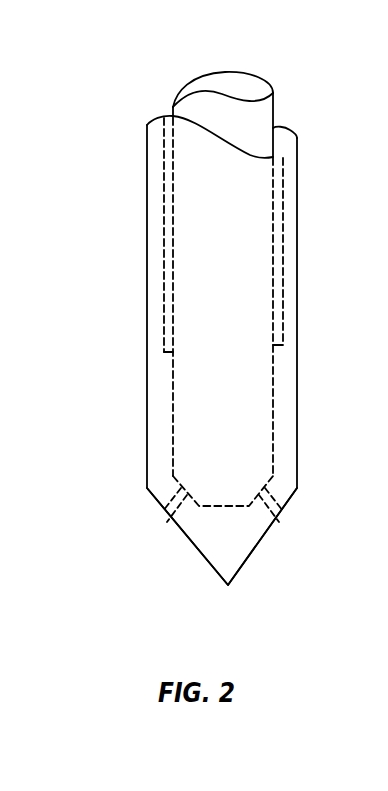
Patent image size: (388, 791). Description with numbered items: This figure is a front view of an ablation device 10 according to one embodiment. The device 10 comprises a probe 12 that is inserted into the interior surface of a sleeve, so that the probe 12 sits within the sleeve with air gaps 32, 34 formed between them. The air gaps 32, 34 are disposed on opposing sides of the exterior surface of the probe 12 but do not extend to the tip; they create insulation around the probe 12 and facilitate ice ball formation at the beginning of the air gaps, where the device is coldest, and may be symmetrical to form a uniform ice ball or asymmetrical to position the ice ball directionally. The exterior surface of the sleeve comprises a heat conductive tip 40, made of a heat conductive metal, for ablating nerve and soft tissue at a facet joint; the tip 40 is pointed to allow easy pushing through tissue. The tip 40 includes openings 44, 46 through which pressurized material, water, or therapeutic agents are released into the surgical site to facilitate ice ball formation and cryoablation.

The ablation device 10 is at (49, 58).
The probe 12 is at (290, 95).
The air gap 32 is at (167, 208).
The air gap 34 is at (278, 222).
The heat conductive tip 40 is at (224, 587).
The opening 44 is at (173, 508).
The opening 46 is at (273, 510).